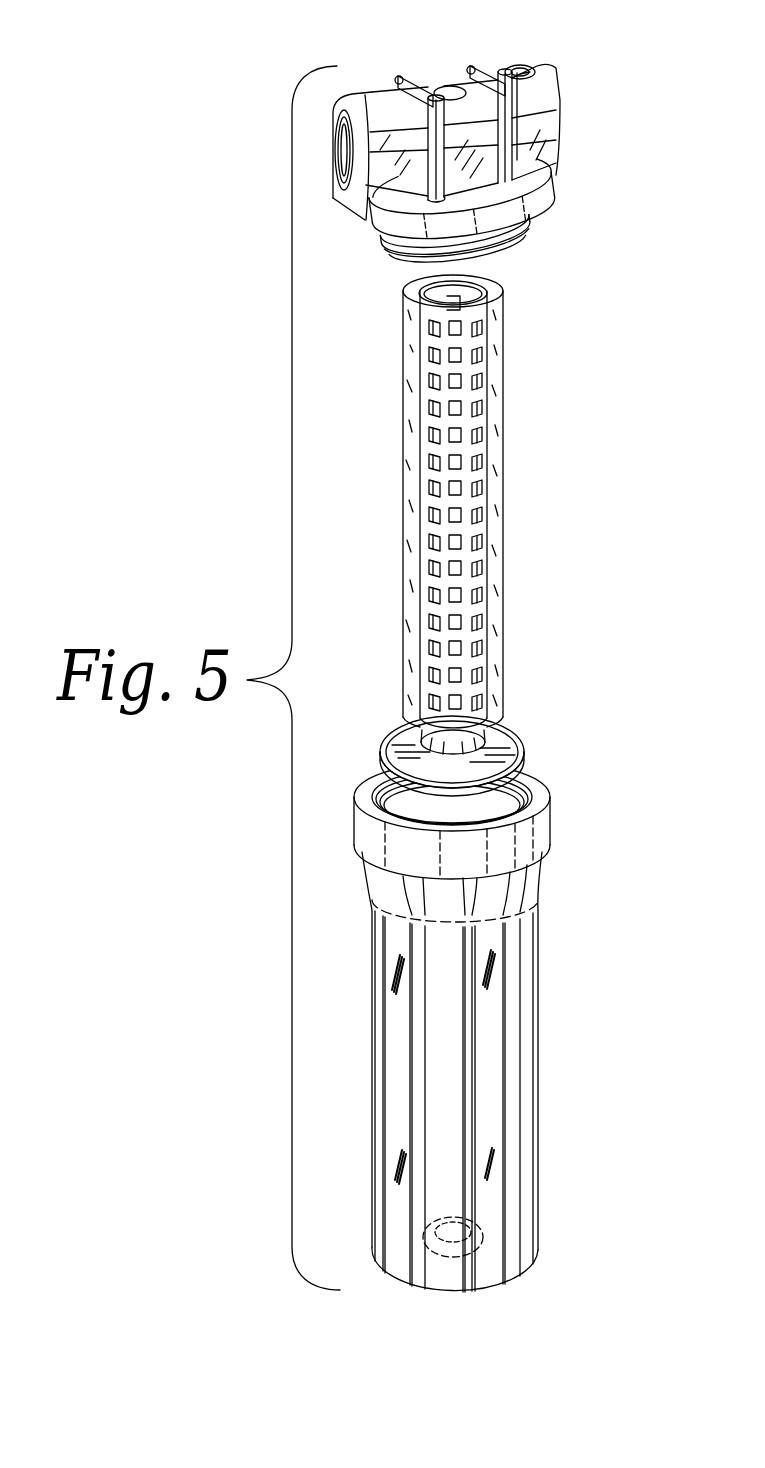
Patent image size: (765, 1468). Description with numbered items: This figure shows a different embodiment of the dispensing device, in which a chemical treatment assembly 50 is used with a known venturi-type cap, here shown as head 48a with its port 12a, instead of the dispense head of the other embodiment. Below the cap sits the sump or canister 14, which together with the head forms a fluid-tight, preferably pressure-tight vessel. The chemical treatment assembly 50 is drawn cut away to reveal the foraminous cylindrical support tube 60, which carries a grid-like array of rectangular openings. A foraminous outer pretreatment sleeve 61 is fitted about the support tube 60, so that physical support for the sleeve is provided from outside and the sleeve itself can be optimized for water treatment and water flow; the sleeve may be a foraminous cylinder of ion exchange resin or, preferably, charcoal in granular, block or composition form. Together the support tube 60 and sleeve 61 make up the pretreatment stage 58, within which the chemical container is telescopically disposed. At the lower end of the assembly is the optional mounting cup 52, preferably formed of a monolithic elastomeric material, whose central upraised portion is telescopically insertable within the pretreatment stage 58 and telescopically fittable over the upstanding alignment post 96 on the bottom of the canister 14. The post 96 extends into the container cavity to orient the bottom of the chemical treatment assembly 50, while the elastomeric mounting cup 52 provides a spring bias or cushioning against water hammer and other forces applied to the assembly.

The inlet port boss 12a is at (441, 84).
The filter head 48a is at (558, 107).
The pretreatment stage 58 is at (500, 290).
The foraminous cylindrical support tube 60 is at (467, 370).
The foraminous outer pretreatment sleeve 61 is at (493, 417).
The chemical treatment assembly 50 is at (531, 560).
The mounting cup 52 is at (521, 742).
The canister 14 is at (540, 1065).
The alignment post 96 is at (485, 1242).